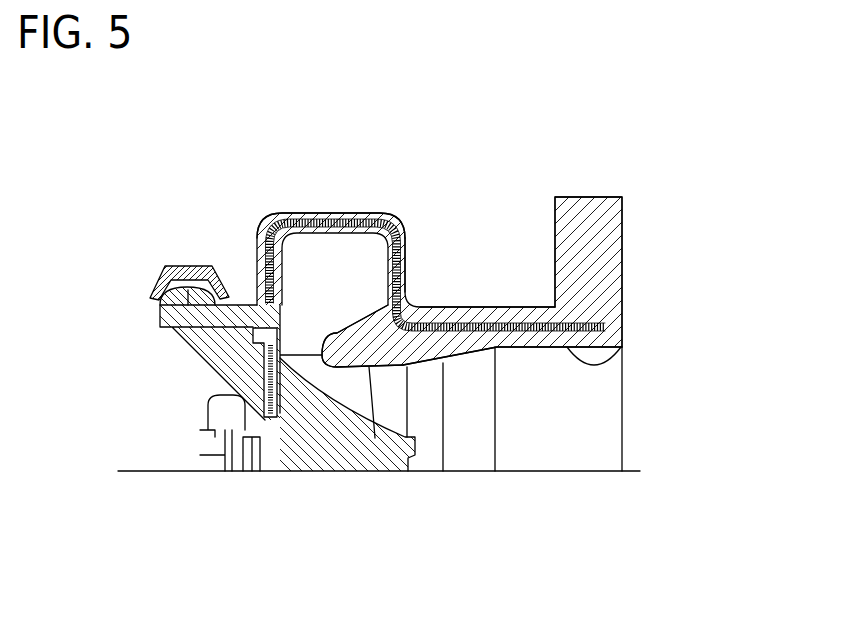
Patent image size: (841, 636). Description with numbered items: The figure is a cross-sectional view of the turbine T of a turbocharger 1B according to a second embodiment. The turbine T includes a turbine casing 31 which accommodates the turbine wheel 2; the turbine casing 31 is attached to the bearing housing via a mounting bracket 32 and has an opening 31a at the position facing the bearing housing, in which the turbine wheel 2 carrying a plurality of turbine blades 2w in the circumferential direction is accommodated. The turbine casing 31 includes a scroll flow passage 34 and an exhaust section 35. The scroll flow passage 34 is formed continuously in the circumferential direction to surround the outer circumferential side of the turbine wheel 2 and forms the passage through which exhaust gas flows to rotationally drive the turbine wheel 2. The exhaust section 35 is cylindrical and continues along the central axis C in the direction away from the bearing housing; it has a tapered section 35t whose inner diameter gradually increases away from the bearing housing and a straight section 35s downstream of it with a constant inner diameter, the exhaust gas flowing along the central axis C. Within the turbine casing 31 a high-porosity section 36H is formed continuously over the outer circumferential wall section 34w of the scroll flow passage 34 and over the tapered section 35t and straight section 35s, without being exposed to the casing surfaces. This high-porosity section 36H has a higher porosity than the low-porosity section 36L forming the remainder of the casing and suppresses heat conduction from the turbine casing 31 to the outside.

The turbocharger 1B is at (267, 161).
The turbine wheel 2 is at (440, 473).
The turbine blades 2w is at (372, 404).
The turbine casing 31 is at (470, 307).
The opening 31a is at (252, 358).
The mounting bracket 32 is at (190, 263).
The scroll flow passage 34 is at (341, 212).
The outer circumferential wall section 34w is at (312, 214).
The exhaust section 35 is at (505, 307).
The straight section 35s is at (627, 348).
The tapered section 35t is at (463, 347).
The high-porosity section 36H is at (407, 212).
The low-porosity section 36L is at (357, 333).
The turbine T is at (411, 272).
The central axis C is at (636, 472).